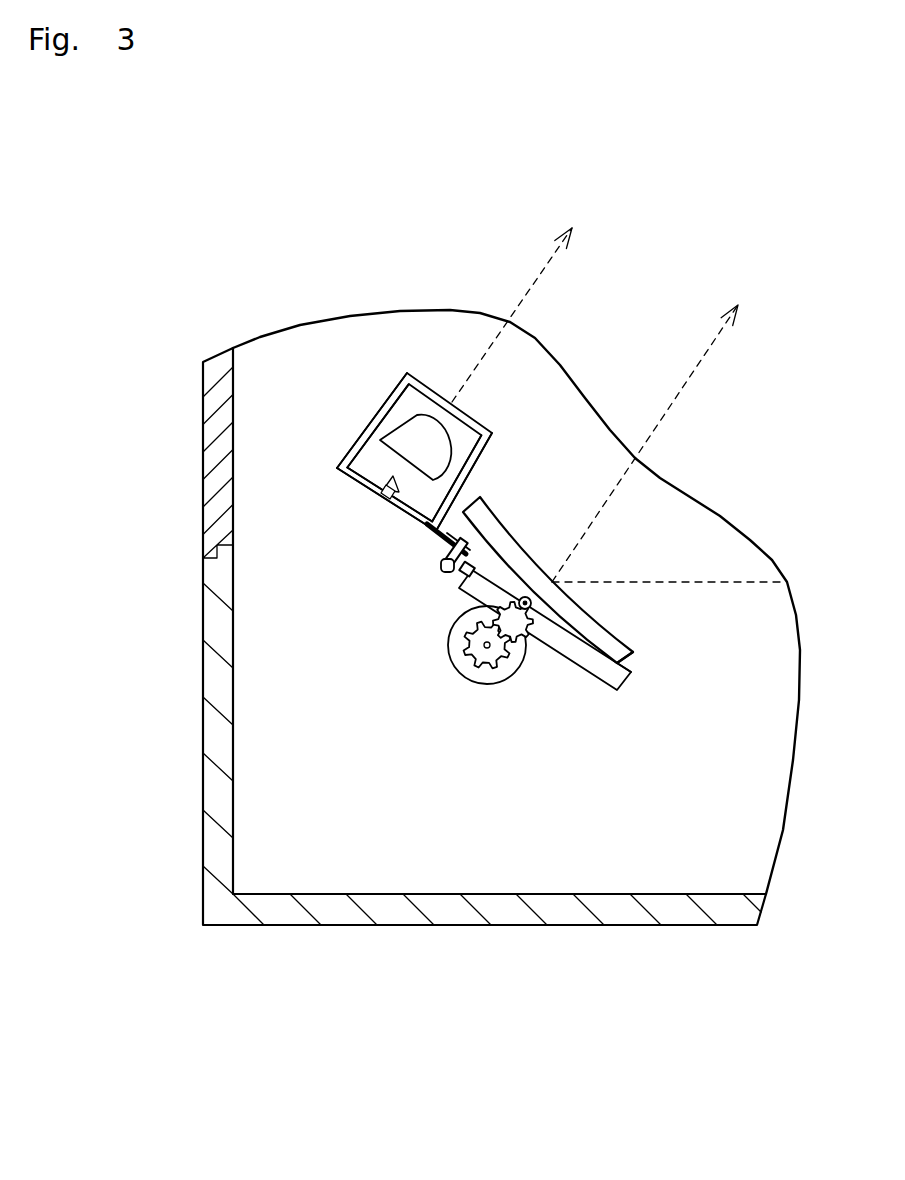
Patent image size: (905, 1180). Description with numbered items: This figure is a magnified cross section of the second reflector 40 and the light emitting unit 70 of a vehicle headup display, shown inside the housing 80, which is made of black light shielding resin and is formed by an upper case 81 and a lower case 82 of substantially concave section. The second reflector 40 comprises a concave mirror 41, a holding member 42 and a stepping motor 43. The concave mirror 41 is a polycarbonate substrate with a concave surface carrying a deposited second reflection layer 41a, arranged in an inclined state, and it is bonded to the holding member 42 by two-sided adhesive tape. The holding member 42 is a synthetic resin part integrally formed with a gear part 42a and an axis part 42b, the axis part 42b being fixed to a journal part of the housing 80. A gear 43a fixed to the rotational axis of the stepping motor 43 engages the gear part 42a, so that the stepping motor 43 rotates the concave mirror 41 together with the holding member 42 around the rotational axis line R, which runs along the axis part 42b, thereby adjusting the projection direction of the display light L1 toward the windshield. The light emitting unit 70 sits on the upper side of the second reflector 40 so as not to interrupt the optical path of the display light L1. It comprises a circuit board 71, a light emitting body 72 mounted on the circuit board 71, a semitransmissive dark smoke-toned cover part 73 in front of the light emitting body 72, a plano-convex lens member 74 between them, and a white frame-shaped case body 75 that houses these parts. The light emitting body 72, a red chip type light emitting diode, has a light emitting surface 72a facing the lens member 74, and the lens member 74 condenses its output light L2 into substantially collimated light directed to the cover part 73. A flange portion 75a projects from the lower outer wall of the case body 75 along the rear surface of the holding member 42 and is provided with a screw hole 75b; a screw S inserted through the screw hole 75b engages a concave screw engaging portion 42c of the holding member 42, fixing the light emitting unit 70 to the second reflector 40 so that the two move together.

The second reflector 40 is at (537, 646).
The concave mirror 41 is at (507, 553).
The second reflection layer 41a is at (615, 640).
The holding member 42 is at (612, 681).
The gear part 42a is at (513, 628).
The axis part 42b is at (529, 614).
The screw engaging portion 42c is at (462, 566).
The stepping motor 43 is at (455, 657).
The gear 43a is at (486, 652).
The light emitting unit 70 is at (393, 487).
The circuit board 71 is at (356, 483).
The light emitting body 72 is at (388, 494).
The light emitting surface 72a is at (381, 482).
The cover part 73 is at (471, 423).
The lens member 74 is at (410, 428).
The case body 75 is at (372, 428).
The flange portion 75a is at (434, 531).
The screw hole 75b is at (440, 554).
The housing 80 is at (488, 640).
The upper case 81 is at (217, 377).
The lower case 82 is at (508, 905).
The screw S is at (443, 568).
The rotational axis line R is at (533, 603).
The display light L1 is at (690, 378).
The output light L2 is at (537, 285).